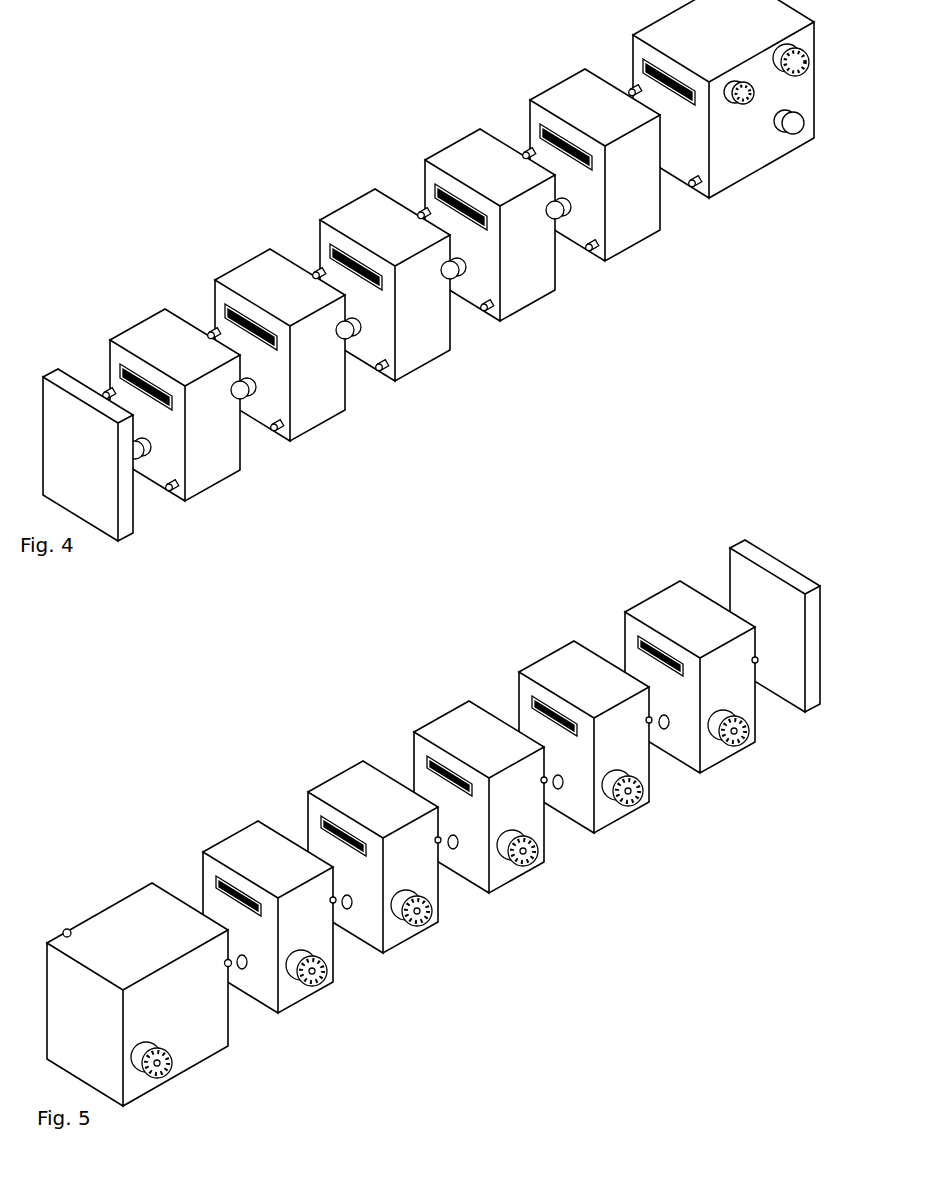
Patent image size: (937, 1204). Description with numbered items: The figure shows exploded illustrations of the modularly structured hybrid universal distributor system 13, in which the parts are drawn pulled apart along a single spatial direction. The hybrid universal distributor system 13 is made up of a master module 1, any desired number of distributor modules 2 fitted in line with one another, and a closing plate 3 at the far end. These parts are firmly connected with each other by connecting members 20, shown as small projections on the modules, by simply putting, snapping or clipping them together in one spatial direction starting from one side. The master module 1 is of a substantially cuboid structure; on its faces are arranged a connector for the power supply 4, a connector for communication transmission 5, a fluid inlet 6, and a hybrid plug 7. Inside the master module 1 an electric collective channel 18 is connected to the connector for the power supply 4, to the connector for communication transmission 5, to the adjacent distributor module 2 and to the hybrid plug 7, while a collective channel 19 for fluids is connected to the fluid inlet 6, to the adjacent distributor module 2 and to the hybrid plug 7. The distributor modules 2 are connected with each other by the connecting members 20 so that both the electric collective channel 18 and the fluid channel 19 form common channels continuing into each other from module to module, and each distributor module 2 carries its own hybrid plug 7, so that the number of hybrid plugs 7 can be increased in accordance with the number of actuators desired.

In FIG. 4, the master module 1 is at (736, 99).
In FIG. 5, the master module 1 is at (150, 912).
In FIG. 4, the distributor module 2 is at (565, 97).
In FIG. 5, the distributor module 2 is at (665, 608).
In FIG. 4, the closing plate 3 is at (63, 402).
In FIG. 5, the closing plate 3 is at (749, 553).
In FIG. 4, the connector for the power supply 4 is at (813, 53).
In FIG. 4, the connector for communication transmission 5 is at (755, 93).
In FIG. 4, the fluid inlet 6 is at (795, 125).
In FIG. 5, the hybrid plug 7 is at (313, 988).
In FIG. 4, the hybrid universal distributor system 13 is at (205, 122).
In FIG. 5, the hybrid universal distributor system 13 is at (190, 735).
In FIG. 4, the electric collective channel 18 is at (683, 100).
In FIG. 5, the electric collective channel 18 is at (570, 735).
In FIG. 4, the collective channel for fluids 19 is at (453, 272).
In FIG. 5, the collective channel for fluids 19 is at (455, 850).
In FIG. 4, the connecting member 20 is at (282, 427).